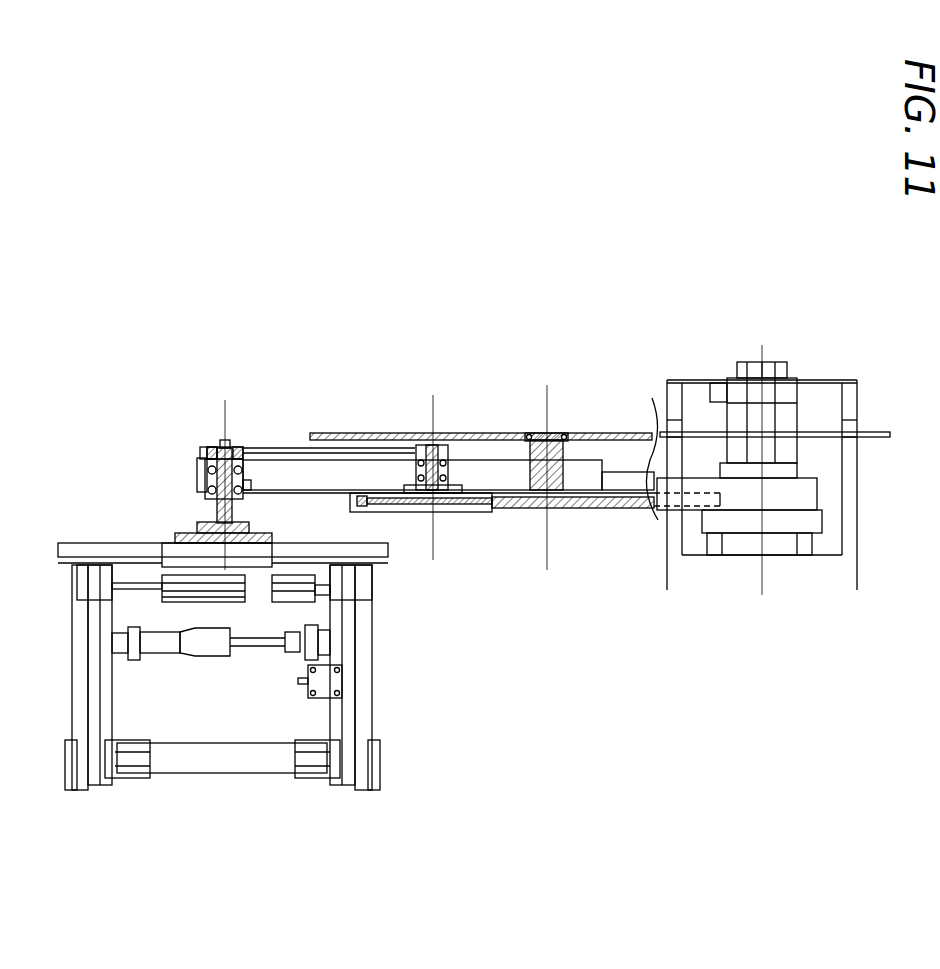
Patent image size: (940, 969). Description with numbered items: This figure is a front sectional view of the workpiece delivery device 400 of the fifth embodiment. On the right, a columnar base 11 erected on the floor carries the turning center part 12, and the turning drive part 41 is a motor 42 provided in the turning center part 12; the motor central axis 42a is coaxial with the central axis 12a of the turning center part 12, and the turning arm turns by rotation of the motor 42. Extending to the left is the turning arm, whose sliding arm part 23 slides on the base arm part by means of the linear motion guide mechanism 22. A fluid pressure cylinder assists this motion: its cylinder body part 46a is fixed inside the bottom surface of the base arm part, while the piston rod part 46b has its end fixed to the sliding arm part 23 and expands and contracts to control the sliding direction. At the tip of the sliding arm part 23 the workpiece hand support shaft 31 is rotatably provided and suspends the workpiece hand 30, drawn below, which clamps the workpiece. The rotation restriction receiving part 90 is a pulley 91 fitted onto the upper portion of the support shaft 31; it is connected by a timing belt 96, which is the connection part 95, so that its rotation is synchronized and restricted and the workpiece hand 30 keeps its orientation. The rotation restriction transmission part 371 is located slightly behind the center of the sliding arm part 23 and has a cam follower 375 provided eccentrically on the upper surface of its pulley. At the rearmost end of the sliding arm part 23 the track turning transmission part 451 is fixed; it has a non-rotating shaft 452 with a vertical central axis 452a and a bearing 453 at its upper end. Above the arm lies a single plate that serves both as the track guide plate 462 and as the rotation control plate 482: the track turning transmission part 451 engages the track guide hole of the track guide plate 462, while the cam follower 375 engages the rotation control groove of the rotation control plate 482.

The base 11 is at (830, 568).
The turning center part 12 is at (828, 478).
The central axis of the turning center part 12a is at (762, 580).
The linear motion guide mechanism 22 is at (488, 513).
The sliding arm part 23 is at (295, 482).
The workpiece hand 30 is at (123, 527).
The workpiece hand support shaft 31 is at (197, 488).
The turning drive part 41 is at (745, 370).
The motor 42 is at (742, 362).
The motor central axis 42a is at (765, 347).
The cylinder body part 46a is at (587, 512).
The piston rod part 46b is at (417, 515).
The rotation restriction receiving part 90 is at (175, 387).
The pulley 91 is at (215, 447).
The connection part 95 is at (313, 384).
The timing belt 96 is at (257, 450).
The rotation restriction transmission part 371 is at (462, 467).
The cam follower 375 is at (447, 437).
The workpiece delivery device 400 is at (787, 464).
The track turning transmission part 451 is at (572, 408).
The non-rotating shaft 452 is at (527, 433).
The central axis 452a is at (548, 390).
The bearing 453 is at (567, 433).
The track guide plate 462 is at (589, 378).
The rotation control plate 482 is at (328, 433).